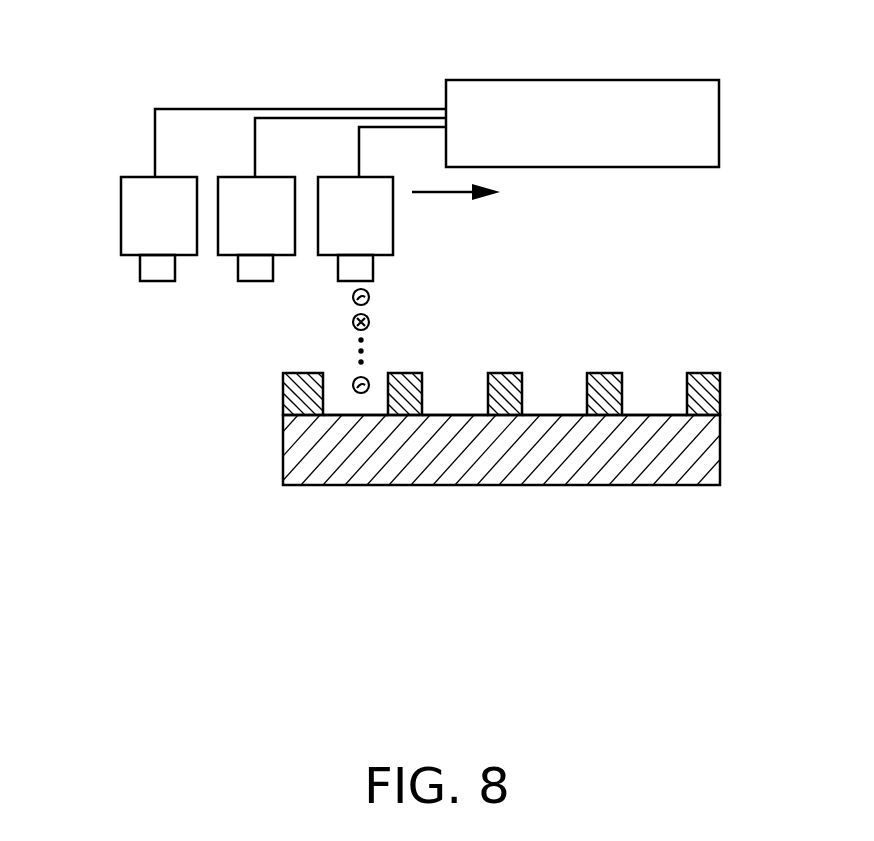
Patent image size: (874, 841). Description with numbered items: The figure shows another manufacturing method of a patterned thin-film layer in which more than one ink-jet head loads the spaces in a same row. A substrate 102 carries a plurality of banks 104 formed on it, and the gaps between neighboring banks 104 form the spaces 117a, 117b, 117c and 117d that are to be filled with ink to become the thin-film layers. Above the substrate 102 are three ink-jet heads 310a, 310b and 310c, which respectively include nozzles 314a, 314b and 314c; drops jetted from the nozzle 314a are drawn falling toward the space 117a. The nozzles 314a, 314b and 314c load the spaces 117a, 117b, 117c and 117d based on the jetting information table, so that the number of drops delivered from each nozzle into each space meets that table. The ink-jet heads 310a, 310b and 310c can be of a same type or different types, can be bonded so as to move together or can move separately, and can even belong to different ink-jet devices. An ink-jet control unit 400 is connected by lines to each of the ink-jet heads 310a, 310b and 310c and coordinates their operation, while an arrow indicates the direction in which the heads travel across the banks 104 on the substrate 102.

The ink-jet control unit 400 is at (583, 80).
The ink-jet head 310a is at (370, 212).
The ink-jet head 310b is at (272, 228).
The ink-jet head 310c is at (153, 195).
The nozzle 314a is at (360, 268).
The nozzle 314b is at (257, 270).
The nozzle 314c is at (158, 270).
The pixel region 117a is at (337, 385).
The pixel region 117b is at (453, 373).
The pixel region 117c is at (540, 395).
The pixel region 117d is at (657, 402).
The bank 104 is at (703, 392).
The substrate 102 is at (685, 472).